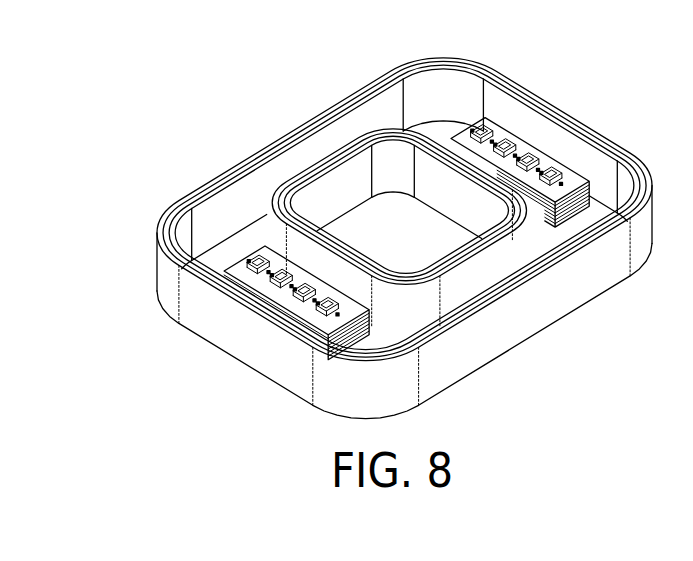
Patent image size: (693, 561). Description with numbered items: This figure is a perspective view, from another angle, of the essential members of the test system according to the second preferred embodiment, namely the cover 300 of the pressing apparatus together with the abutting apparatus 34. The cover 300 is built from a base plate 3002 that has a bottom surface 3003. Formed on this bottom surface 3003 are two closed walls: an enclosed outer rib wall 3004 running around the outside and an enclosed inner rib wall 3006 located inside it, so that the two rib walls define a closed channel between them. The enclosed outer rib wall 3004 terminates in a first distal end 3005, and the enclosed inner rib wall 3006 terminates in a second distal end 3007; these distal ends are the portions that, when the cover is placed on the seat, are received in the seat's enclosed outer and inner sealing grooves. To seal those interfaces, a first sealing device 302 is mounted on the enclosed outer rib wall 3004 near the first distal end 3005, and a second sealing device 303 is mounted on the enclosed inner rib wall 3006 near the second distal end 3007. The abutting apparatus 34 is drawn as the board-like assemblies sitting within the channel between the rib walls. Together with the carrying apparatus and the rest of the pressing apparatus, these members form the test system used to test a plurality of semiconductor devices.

The cover 300 is at (287, 133).
The first sealing device 302 is at (447, 77).
The second sealing device 303 is at (392, 136).
The base plate 3002 is at (597, 210).
The bottom surface 3003 is at (232, 243).
The enclosed outer rib wall 3004 is at (527, 130).
The first distal end 3005 is at (588, 137).
The enclosed inner rib wall 3006 is at (483, 270).
The second distal end 3007 is at (278, 197).
The abutting apparatus 34 is at (247, 278).